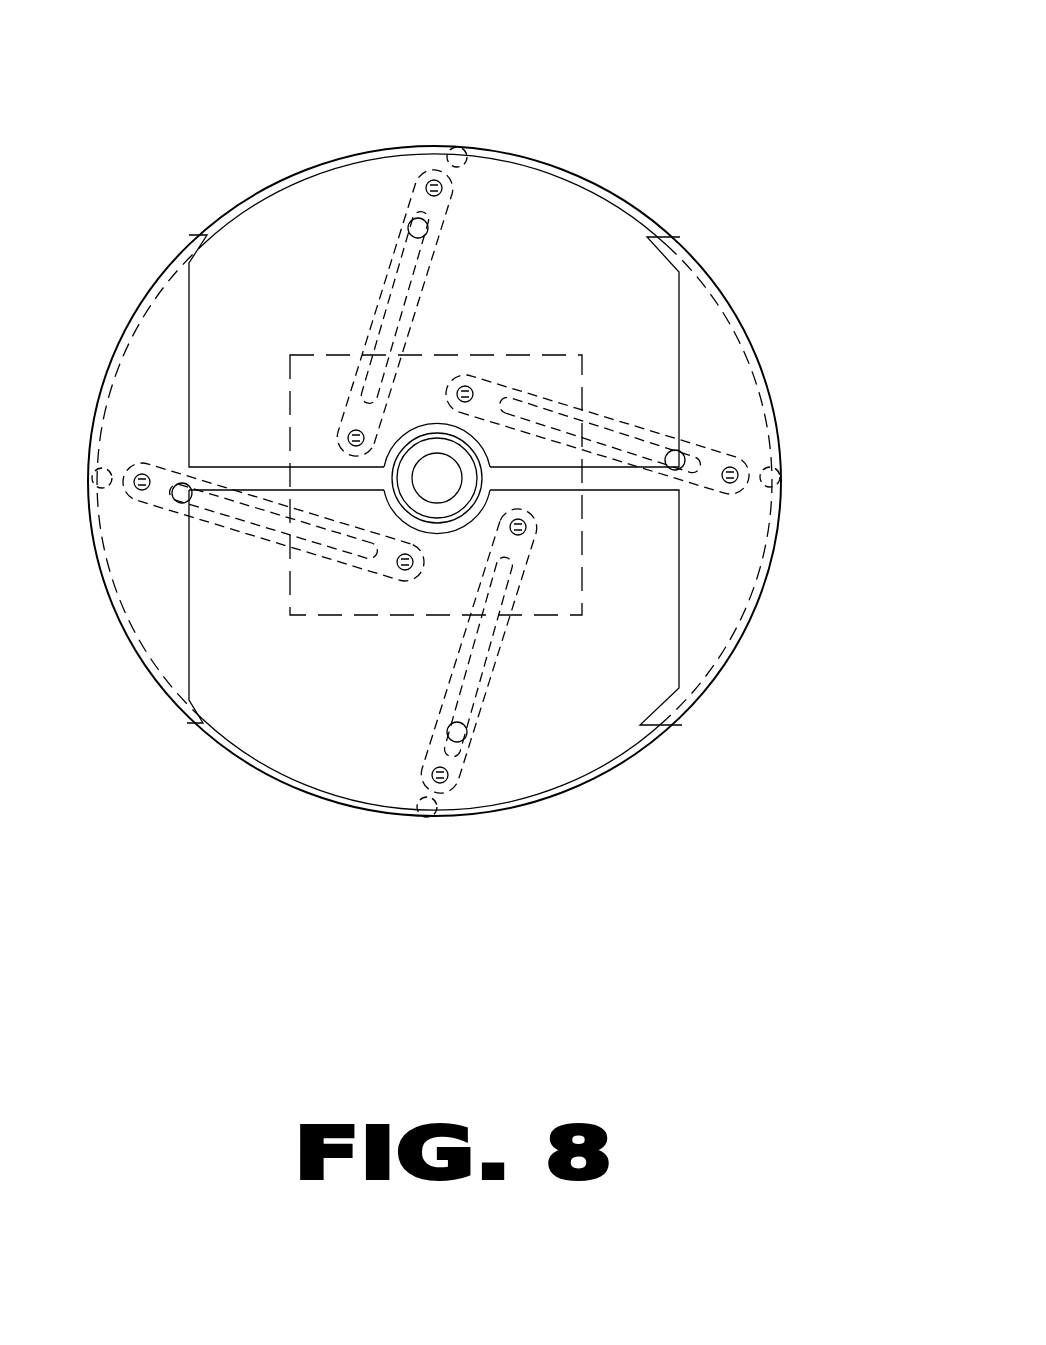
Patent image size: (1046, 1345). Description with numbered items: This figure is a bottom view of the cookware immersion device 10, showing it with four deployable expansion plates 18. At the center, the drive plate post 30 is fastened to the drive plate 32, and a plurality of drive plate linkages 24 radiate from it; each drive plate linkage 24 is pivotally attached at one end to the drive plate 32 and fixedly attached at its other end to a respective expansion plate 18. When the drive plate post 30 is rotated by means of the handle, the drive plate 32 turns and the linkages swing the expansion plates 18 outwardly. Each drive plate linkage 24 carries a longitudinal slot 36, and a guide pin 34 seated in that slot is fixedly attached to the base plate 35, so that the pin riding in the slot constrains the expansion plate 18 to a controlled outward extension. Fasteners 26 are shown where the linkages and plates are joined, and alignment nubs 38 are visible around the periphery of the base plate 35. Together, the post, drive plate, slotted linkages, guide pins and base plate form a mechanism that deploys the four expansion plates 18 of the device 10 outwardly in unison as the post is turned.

The cookware immersion device 10 is at (630, 72).
The expansion plate 18 is at (693, 292).
The drive plate linkage 24 is at (257, 533).
The fastener 26 is at (465, 393).
The drive plate post 30 is at (432, 472).
The drive plate 32 is at (360, 615).
The guide pin 34 is at (182, 493).
The base plate 35 is at (320, 797).
The longitudinal slot 36 is at (218, 497).
The alignment nub 38 is at (779, 470).